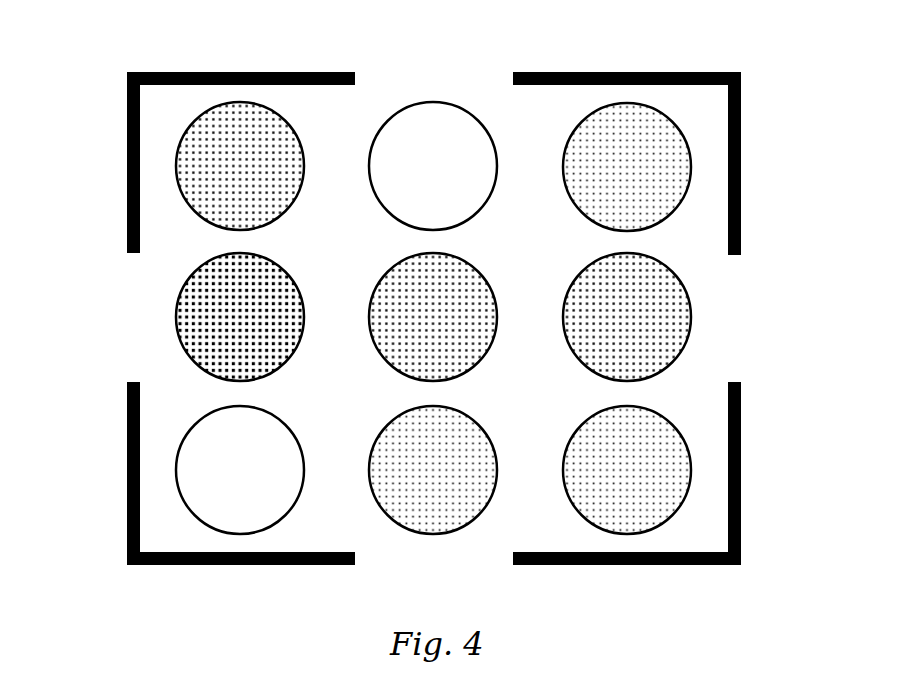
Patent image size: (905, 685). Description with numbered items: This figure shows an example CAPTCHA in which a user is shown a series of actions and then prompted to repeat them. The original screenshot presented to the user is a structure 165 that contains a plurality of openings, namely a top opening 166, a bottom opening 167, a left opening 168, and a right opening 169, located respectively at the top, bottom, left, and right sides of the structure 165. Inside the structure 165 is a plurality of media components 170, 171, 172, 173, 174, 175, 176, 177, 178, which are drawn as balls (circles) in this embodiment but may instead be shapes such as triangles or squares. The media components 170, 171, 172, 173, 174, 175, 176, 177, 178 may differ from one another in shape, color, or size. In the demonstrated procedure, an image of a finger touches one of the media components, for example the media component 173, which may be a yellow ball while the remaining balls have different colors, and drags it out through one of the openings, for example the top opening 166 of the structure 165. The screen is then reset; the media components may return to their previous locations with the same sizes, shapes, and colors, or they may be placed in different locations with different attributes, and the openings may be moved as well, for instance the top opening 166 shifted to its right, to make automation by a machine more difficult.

The structure 165 is at (235, 72).
The opening 166 is at (397, 74).
The opening 167 is at (382, 559).
The opening 168 is at (134, 314).
The opening 169 is at (733, 315).
The media component 170 is at (291, 128).
The media component 171 is at (484, 128).
The media component 172 is at (567, 188).
The media component 173 is at (291, 280).
The media component 174 is at (484, 280).
The media component 175 is at (567, 340).
The media component 176 is at (291, 433).
The media component 177 is at (484, 433).
The media component 178 is at (567, 493).